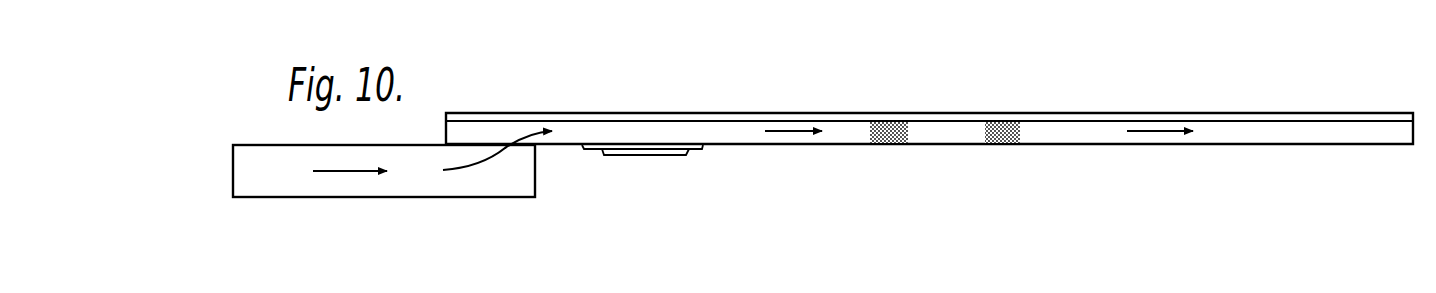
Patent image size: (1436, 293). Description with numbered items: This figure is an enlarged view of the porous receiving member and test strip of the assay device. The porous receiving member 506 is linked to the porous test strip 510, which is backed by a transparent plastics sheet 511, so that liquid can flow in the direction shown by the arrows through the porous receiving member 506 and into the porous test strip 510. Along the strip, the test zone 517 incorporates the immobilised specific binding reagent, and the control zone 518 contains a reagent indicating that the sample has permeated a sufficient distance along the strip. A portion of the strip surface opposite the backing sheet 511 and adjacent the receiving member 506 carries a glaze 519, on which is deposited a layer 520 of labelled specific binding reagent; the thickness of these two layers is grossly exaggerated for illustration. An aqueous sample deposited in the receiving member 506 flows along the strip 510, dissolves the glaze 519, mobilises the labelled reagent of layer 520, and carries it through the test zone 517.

The porous receiving member 506 is at (363, 185).
The porous test strip 510 is at (1272, 132).
The transparent plastics sheet 511 is at (643, 117).
The test zone 517 is at (883, 147).
The control zone 518 is at (1002, 147).
The glaze 519 is at (702, 150).
The layer of labelled specific binding reagent 520 is at (640, 157).